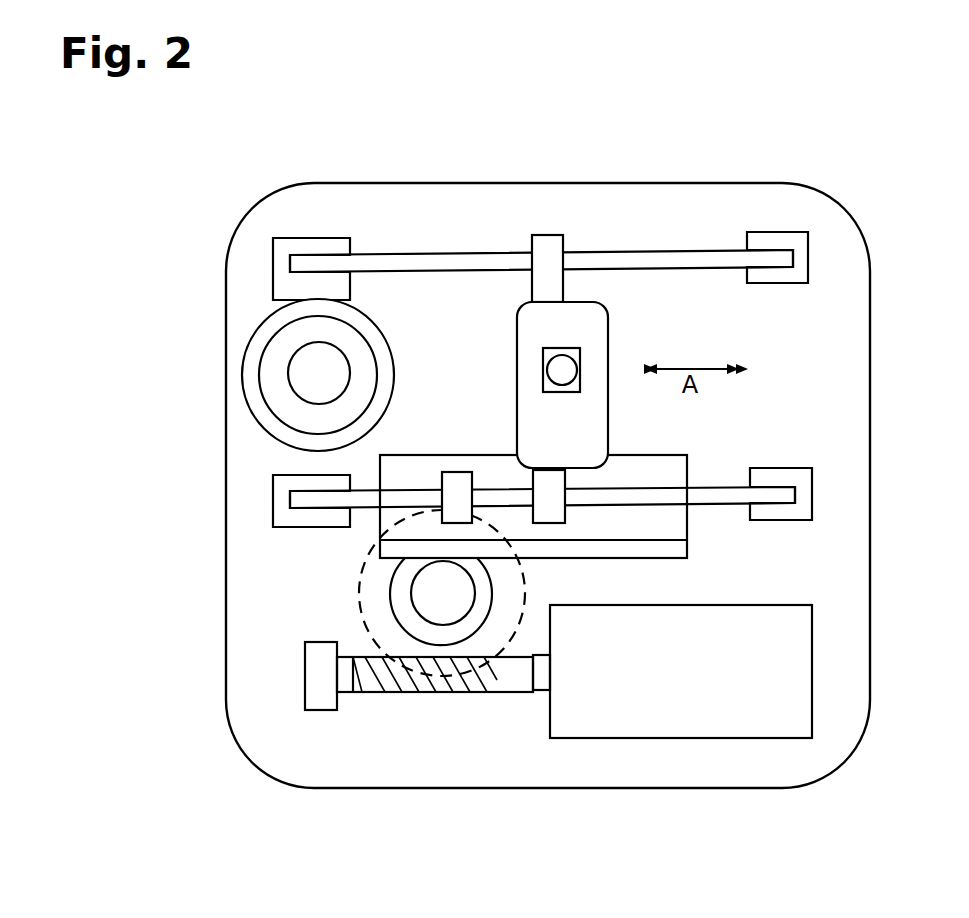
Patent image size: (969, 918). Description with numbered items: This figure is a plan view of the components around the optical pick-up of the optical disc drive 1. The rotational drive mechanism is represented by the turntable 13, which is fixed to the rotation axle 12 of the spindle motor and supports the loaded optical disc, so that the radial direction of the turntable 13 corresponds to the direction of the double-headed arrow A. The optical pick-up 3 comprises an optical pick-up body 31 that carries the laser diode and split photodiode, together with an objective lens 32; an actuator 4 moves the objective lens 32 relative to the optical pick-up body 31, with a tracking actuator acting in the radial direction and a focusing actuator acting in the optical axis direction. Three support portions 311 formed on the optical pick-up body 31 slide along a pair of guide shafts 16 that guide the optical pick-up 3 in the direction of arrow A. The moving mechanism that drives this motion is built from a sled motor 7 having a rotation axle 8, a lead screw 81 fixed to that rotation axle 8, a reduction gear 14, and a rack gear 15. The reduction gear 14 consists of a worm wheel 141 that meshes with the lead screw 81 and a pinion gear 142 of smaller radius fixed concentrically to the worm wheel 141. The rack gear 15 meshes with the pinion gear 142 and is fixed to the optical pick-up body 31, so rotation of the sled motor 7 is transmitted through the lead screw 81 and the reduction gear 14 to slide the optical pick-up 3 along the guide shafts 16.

The optical disc drive 1 is at (913, 224).
The optical pick-up 3 is at (612, 323).
The actuator 4 is at (543, 368).
The sled motor 7 is at (710, 685).
The rotation axle 8 is at (427, 746).
The rotation axle 12 is at (313, 380).
The turntable 13 is at (258, 352).
The reduction gear 14 is at (360, 600).
The rack gear 15 is at (643, 545).
The guide shafts 16 is at (652, 258).
The optical pick-up body 31 is at (588, 420).
The objective lens 32 is at (567, 368).
The lead screw 81 is at (402, 692).
The worm wheel 141 is at (378, 620).
The pinion gear 142 is at (402, 587).
The support portions 311 is at (545, 273).